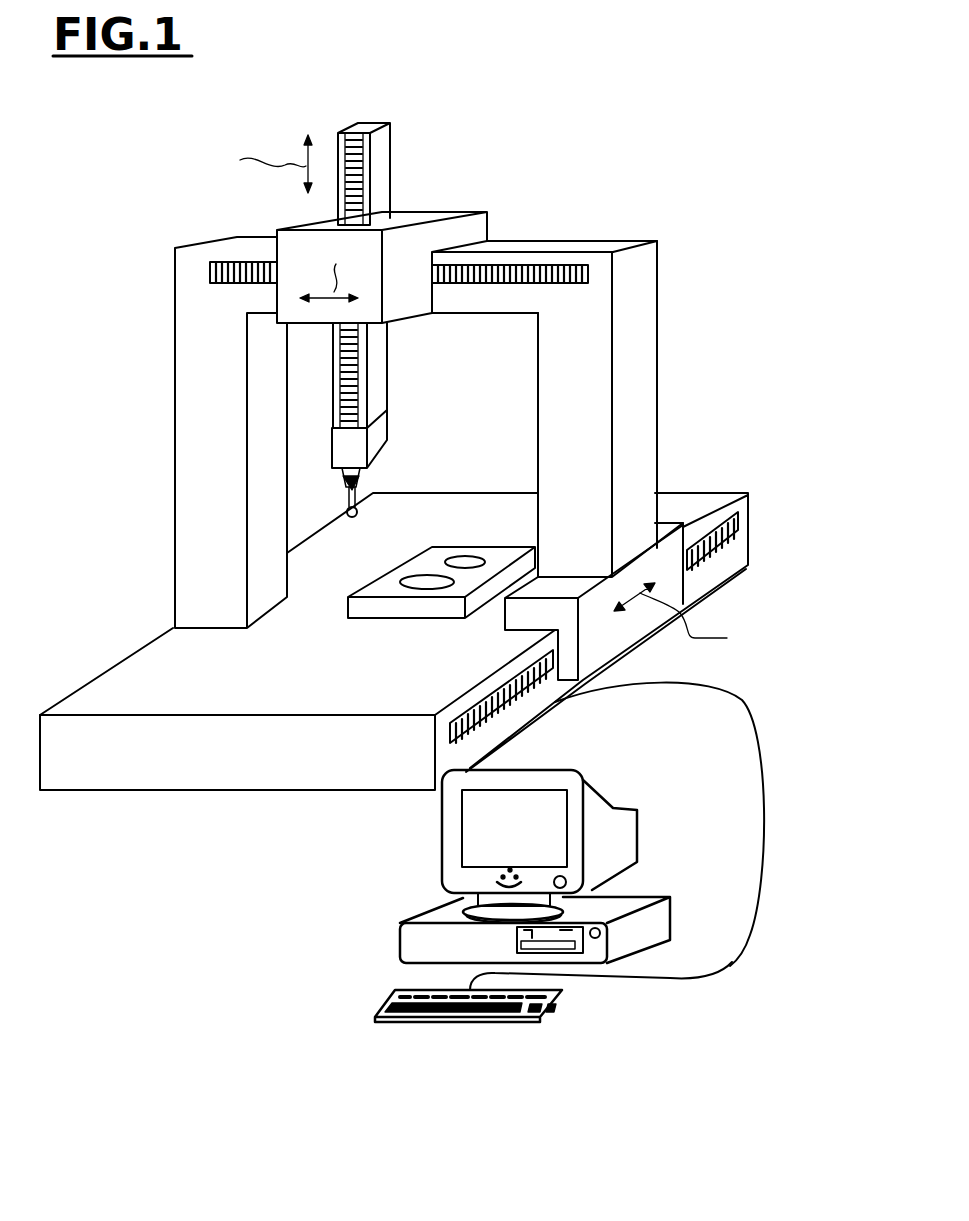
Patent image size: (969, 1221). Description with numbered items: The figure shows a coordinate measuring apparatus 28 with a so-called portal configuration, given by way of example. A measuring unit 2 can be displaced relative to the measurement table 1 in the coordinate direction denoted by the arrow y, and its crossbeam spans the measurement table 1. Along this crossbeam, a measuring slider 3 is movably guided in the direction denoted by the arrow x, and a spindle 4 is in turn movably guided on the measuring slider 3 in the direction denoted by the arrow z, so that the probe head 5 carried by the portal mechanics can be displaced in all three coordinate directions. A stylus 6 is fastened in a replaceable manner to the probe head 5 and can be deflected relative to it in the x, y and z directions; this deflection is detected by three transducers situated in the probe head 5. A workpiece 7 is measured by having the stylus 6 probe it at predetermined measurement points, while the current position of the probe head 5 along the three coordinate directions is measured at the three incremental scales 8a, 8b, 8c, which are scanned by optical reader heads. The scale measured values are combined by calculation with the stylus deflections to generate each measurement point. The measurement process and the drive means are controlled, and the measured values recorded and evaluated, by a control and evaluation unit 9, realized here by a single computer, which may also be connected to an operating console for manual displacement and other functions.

The coordinate measuring apparatus 28 is at (678, 222).
The measurement table 1 is at (682, 502).
The measuring unit 2 is at (648, 380).
The measuring slider 3 is at (435, 215).
The spindle 4 is at (384, 142).
The probe head 5 is at (382, 436).
The stylus 6 is at (357, 490).
The workpiece 7 is at (424, 607).
The incremental scale 8a is at (540, 275).
The incremental scale 8b is at (745, 520).
The incremental scale 8c is at (353, 382).
The control and evaluation unit 9 is at (404, 890).